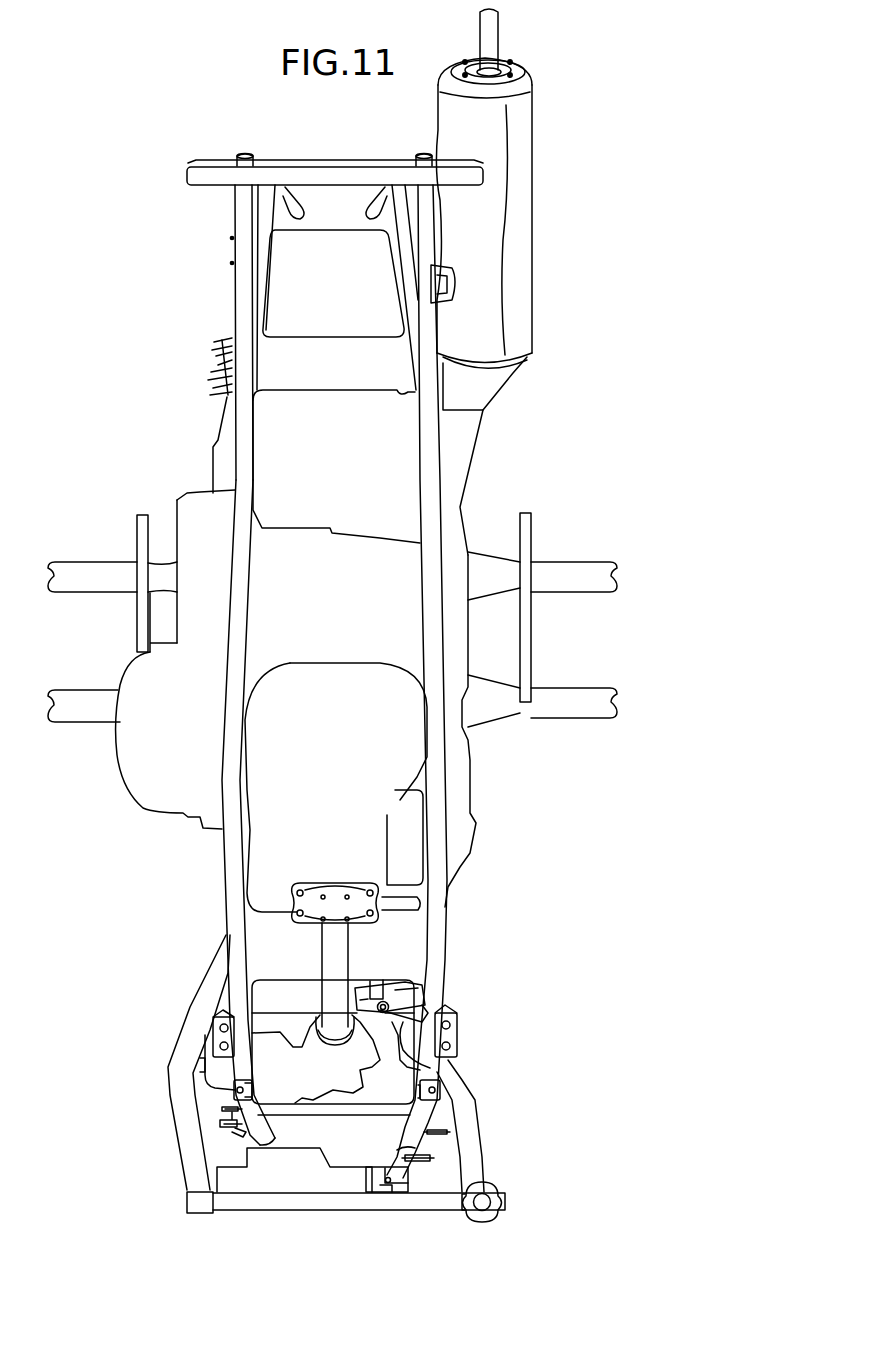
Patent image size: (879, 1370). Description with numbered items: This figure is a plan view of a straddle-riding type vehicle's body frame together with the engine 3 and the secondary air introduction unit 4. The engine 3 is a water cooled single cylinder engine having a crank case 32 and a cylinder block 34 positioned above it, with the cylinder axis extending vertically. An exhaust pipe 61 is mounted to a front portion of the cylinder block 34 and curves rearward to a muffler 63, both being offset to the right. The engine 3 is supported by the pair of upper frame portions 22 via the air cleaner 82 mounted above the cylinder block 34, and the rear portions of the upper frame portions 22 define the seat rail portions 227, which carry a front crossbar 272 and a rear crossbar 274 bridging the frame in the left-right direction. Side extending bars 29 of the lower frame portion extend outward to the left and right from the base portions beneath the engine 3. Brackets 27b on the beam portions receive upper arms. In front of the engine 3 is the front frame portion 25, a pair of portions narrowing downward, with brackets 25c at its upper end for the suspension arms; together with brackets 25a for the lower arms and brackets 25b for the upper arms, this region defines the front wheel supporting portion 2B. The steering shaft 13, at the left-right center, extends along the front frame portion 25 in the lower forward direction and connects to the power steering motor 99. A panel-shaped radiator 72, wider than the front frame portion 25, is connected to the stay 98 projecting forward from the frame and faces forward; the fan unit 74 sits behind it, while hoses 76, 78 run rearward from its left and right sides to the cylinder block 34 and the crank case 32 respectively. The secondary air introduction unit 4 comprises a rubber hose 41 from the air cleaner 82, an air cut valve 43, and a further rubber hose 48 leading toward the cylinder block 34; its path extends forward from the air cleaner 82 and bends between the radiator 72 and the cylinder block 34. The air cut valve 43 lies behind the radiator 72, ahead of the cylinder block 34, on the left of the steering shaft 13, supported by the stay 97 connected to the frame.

The crossbar 274 is at (337, 182).
The muffler 63 is at (515, 237).
The seat rail portions 227 is at (244, 297).
The crossbar 272 is at (334, 358).
The brackets 27b is at (210, 362).
The side extending bars 29 is at (80, 577).
The engine 3 is at (138, 675).
The crank case 32 is at (158, 788).
The air cleaner 82 is at (392, 743).
The cylinder block 34 is at (405, 828).
The exhaust pipe 61 is at (456, 862).
The upper frame portions 22 is at (232, 877).
The steering shaft 13 is at (335, 950).
The rubber hose 48 is at (355, 978).
The rubber hose 41 is at (372, 990).
The air cut valve 43 is at (416, 1005).
The secondary air introduction unit 4 is at (439, 997).
The brackets 25c is at (215, 1033).
The stay 97 is at (430, 1068).
The power steering motor 99 is at (213, 1080).
The hose 76 is at (187, 1117).
The brackets 25b is at (232, 1136).
The fan unit 74 is at (234, 1186).
The radiator 72 is at (275, 1212).
The front frame portion 25 is at (402, 1152).
The stay 98 is at (398, 1193).
The brackets 25a is at (420, 1162).
The hose 78 is at (472, 1138).
The front wheel supporting portion 2B is at (444, 1139).